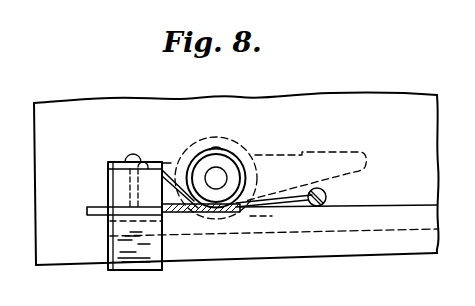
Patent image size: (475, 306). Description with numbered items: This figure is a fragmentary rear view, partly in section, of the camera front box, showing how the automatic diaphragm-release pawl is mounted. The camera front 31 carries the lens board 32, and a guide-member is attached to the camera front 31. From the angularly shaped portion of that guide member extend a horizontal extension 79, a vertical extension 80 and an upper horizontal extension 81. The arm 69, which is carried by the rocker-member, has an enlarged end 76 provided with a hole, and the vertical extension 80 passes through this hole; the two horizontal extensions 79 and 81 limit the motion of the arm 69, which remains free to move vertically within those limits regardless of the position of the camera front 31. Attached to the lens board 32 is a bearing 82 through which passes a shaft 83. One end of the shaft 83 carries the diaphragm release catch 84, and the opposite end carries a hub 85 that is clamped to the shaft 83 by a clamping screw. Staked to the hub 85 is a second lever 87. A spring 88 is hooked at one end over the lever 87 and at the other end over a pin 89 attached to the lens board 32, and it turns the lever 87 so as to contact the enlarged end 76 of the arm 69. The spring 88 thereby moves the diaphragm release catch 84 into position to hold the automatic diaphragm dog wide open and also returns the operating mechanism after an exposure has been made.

The camera front 31 is at (427, 242).
The lens board 32 is at (427, 173).
The arm 69 is at (177, 213).
The enlarged end 76 is at (253, 203).
The horizontal extension 79 is at (169, 163).
The vertical extension 80 is at (113, 237).
The upper horizontal extension 81 is at (120, 162).
The bearing 82 is at (240, 150).
The shaft 83 is at (217, 186).
The diaphragm release catch 84 is at (342, 156).
The hub 85 is at (233, 172).
The second lever 87 is at (122, 178).
The spring 88 is at (288, 201).
The pin 89 is at (327, 197).